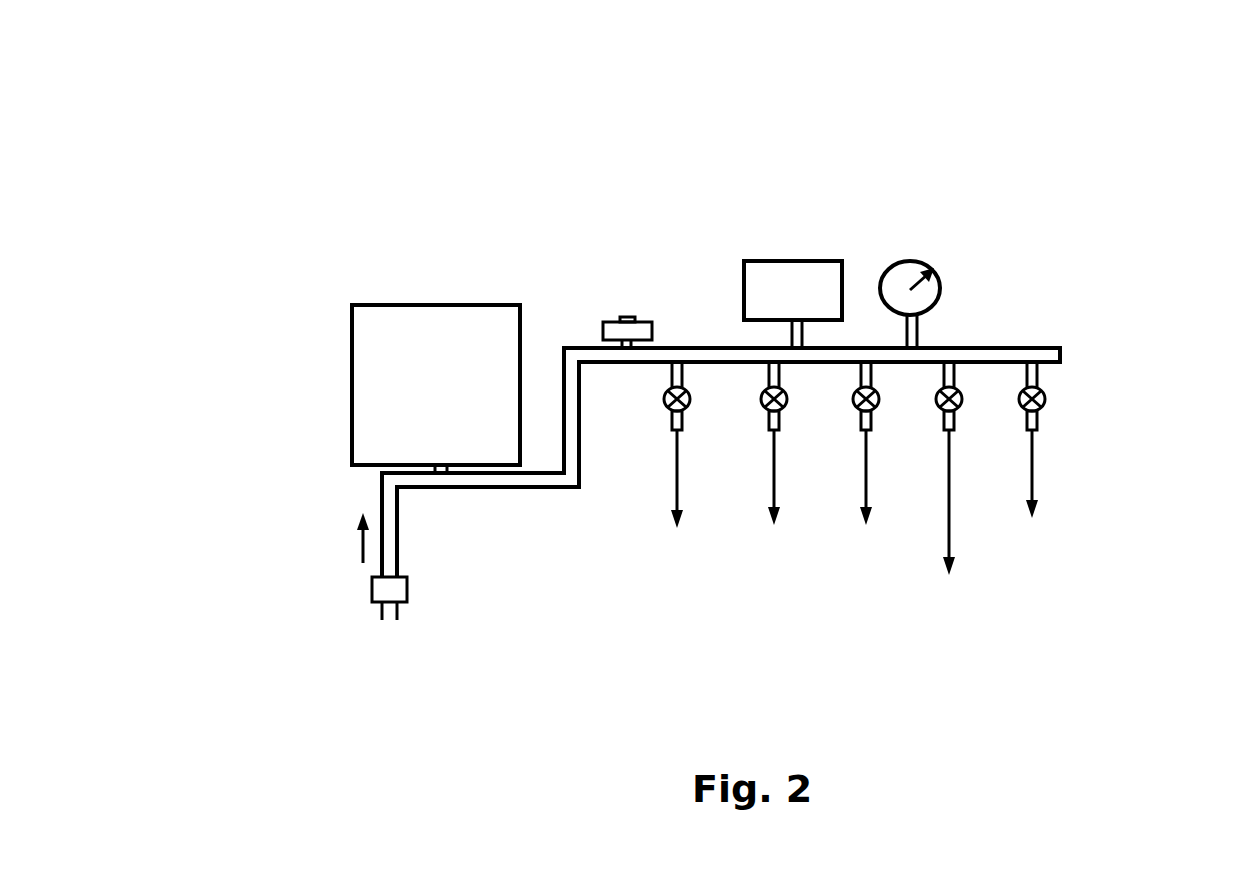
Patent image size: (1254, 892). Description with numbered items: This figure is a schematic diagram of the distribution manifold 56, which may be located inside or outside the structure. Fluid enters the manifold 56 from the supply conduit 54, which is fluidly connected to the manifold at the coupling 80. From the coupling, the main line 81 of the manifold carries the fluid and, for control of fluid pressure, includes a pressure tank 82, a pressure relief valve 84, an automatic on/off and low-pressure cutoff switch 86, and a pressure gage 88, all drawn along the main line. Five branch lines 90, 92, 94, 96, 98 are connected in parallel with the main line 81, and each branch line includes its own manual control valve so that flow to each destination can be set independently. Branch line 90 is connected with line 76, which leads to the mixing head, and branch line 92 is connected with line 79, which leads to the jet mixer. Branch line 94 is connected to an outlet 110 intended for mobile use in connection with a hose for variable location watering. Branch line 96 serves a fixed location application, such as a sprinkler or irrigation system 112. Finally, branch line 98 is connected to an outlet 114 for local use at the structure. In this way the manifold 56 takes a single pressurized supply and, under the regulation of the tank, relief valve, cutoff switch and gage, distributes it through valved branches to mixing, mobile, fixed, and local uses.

The distribution manifold 56 is at (1165, 121).
The supply conduit 54 is at (397, 612).
The coupling 80 is at (373, 587).
The main line 81 is at (384, 495).
The pressure tank 82 is at (352, 305).
The pressure relief valve 84 is at (603, 325).
The automatic on/off and low-pressure cutoff switch 86 is at (805, 260).
The pressure gage 88 is at (921, 262).
The branch line 90 is at (682, 413).
The branch line 92 is at (779, 413).
The branch line 94 is at (871, 413).
The branch line 96 is at (958, 412).
The branch line 98 is at (1041, 412).
The line 76 is at (673, 502).
The line 79 is at (776, 500).
The outlet 110 is at (865, 500).
The sprinkler or irrigation system 112 is at (942, 530).
The outlet 114 is at (1050, 501).